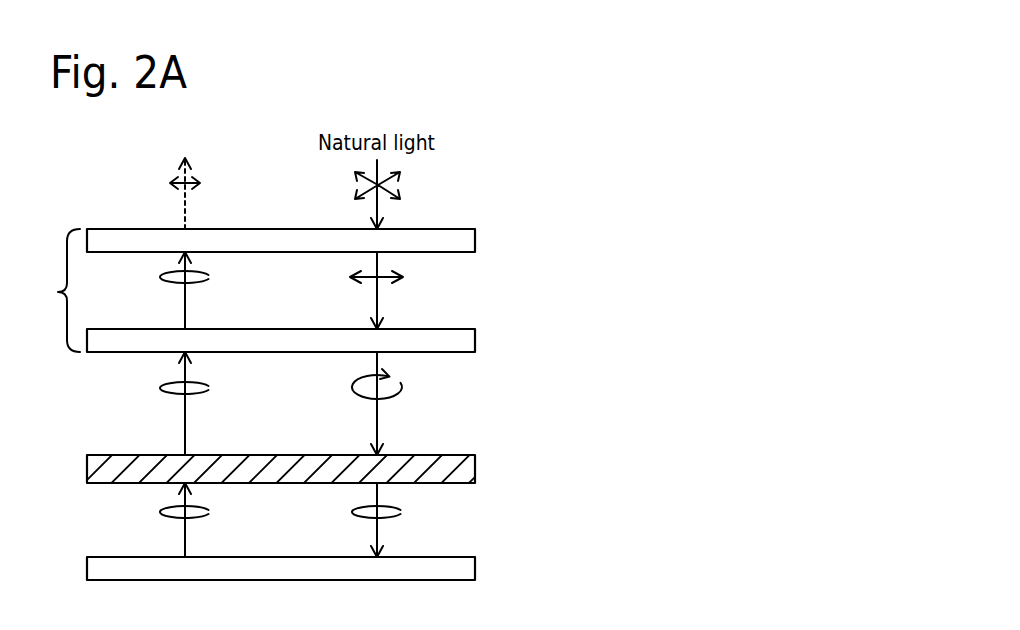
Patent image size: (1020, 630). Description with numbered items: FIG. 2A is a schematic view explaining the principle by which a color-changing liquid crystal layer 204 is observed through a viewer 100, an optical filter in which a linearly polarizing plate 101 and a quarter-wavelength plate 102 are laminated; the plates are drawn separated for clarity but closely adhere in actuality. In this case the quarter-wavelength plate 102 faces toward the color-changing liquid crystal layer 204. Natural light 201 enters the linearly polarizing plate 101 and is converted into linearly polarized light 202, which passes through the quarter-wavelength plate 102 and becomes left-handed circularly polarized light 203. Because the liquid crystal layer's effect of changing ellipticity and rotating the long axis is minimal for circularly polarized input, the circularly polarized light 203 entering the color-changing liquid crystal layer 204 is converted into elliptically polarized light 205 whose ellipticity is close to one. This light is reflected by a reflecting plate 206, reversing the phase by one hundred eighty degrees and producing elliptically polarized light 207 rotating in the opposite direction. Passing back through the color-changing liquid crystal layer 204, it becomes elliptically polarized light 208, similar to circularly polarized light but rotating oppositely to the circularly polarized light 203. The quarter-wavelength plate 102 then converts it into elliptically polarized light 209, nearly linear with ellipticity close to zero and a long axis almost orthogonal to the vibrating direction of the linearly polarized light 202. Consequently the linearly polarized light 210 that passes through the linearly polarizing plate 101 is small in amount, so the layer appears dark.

The viewer 100 is at (46, 290).
The linearly polarizing plate 101 is at (475, 237).
The quarter-wavelength plate 102 is at (475, 335).
The natural light 201 is at (377, 208).
The linearly polarized light 202 is at (377, 298).
The circularly polarized light 203 is at (377, 425).
The color-changing liquid crystal layer 204 is at (452, 455).
The elliptically polarized light 205 is at (377, 532).
The reflecting plate 206 is at (475, 562).
The elliptically polarized light 207 is at (185, 533).
The elliptically polarized light 208 is at (185, 423).
The elliptically polarized light 209 is at (185, 302).
The linearly polarized light 210 is at (185, 210).